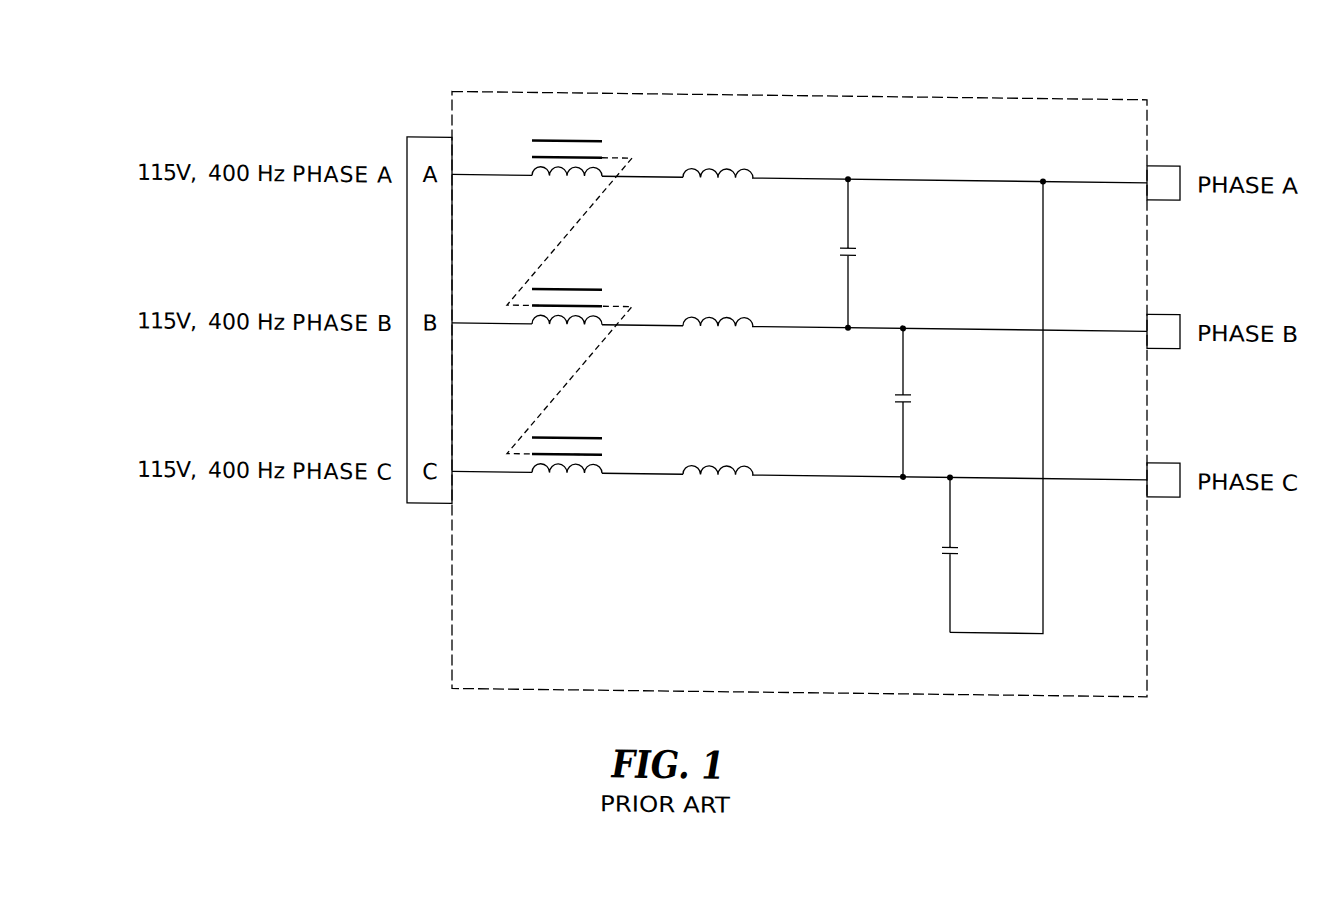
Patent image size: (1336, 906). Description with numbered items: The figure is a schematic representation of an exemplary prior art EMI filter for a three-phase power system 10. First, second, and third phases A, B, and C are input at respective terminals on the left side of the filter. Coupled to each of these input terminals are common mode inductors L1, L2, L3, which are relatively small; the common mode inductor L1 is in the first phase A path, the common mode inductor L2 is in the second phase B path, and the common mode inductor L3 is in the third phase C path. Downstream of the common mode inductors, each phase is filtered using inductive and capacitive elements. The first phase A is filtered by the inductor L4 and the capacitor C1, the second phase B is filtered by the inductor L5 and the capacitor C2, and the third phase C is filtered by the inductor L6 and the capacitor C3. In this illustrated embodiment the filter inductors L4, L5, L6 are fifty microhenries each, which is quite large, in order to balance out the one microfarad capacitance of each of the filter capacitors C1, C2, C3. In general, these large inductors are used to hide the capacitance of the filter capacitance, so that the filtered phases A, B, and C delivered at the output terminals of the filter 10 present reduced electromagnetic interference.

The three-phase power system EMI filter 10 is at (1118, 61).
The common mode inductor L1 is at (559, 187).
The common mode inductor L2 is at (559, 336).
The common mode inductor L3 is at (559, 484).
The inductor L4 is at (718, 203).
The inductor L5 is at (718, 352).
The inductor L6 is at (718, 500).
The capacitor C1 is at (871, 253).
The capacitor C2 is at (926, 402).
The capacitor C3 is at (973, 553).